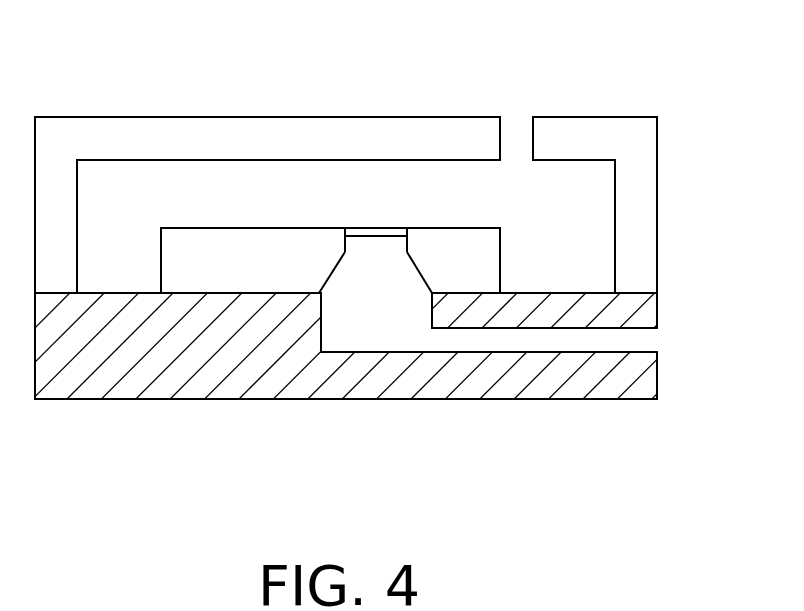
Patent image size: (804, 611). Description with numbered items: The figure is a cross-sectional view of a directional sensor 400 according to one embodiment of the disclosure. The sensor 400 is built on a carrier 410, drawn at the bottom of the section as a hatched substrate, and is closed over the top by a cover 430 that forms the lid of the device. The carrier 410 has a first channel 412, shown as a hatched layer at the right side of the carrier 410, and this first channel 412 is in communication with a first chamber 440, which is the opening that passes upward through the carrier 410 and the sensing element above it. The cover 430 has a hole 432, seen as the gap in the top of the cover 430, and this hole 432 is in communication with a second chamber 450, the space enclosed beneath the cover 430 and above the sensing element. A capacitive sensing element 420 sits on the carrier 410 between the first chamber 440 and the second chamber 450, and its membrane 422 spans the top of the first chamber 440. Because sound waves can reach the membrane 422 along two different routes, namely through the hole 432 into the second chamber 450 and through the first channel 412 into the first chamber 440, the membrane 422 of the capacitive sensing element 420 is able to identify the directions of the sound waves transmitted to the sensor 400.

The sensor 400 is at (386, 274).
The carrier 410 is at (646, 387).
The first channel 412 is at (650, 342).
The capacitive sensing element 420 is at (229, 240).
The membrane 422 is at (362, 232).
The cover 430 is at (650, 194).
The hole 432 is at (518, 137).
The first chamber 440 is at (377, 292).
The second chamber 450 is at (420, 214).